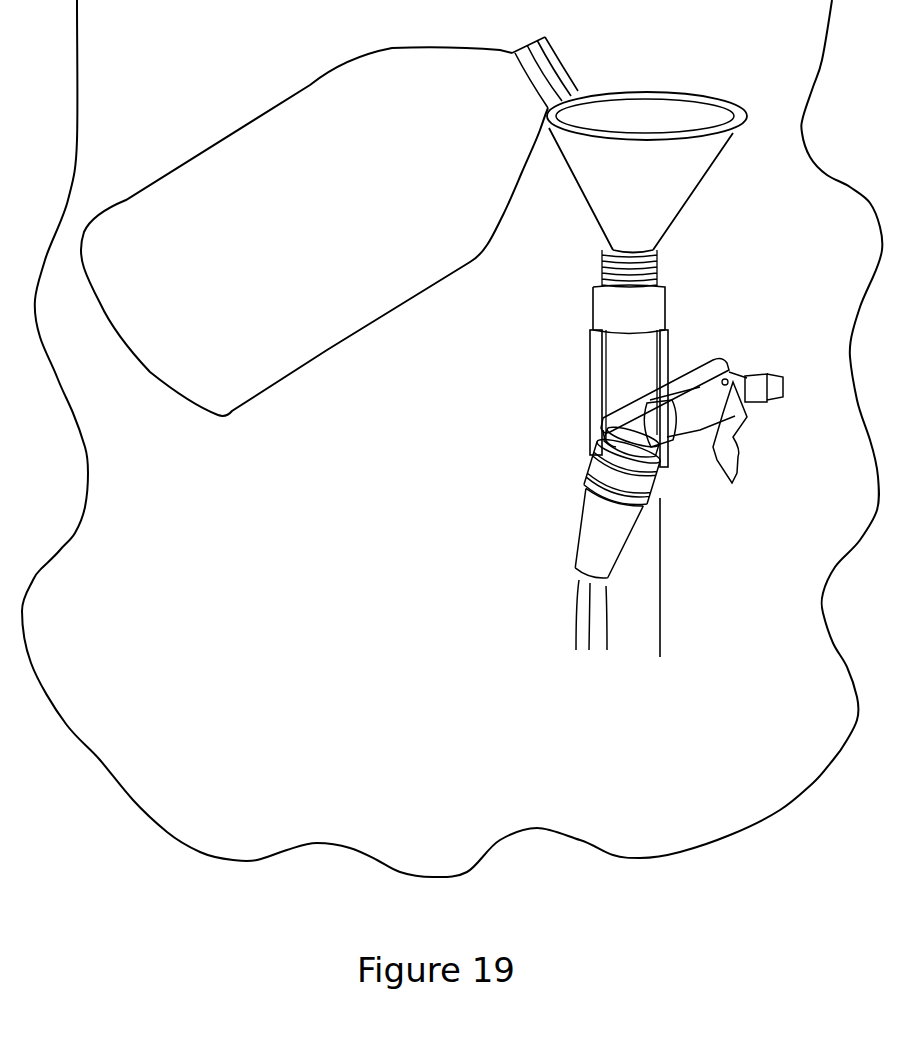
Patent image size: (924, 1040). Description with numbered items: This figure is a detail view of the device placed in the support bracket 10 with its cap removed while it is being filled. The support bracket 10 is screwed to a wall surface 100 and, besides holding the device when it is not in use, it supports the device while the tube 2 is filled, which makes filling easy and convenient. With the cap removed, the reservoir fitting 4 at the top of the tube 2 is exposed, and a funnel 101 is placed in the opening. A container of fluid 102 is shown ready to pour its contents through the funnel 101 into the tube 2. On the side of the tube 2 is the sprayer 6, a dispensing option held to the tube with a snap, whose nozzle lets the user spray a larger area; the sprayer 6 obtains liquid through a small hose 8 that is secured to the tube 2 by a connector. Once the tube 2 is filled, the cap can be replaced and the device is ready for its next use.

The wall surface 100 is at (181, 803).
The container of fluid 102 is at (268, 137).
The funnel 101 is at (652, 208).
The reservoir fitting 4 is at (598, 310).
The support bracket 10 is at (588, 378).
The sprayer 6 is at (738, 443).
The small hose 8 is at (570, 620).
The tube 2 is at (655, 557).